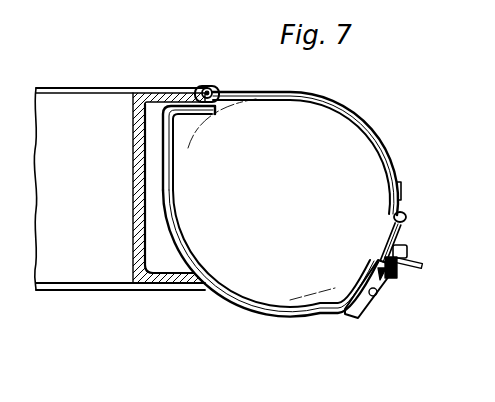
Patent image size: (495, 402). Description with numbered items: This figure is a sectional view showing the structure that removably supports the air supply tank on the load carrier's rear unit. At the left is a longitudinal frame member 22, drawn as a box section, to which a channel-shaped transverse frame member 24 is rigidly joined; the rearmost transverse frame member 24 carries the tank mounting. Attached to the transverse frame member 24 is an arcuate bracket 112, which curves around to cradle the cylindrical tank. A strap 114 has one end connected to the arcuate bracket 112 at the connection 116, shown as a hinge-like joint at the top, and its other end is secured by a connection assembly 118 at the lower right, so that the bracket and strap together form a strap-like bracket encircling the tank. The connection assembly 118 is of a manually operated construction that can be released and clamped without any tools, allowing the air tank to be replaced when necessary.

The longitudinal frame member 22 is at (85, 97).
The transverse frame member 24 is at (133, 140).
The arcuate bracket 112 is at (178, 242).
The strap 114 is at (352, 112).
The connection 116 is at (209, 88).
The connection assembly 118 is at (416, 247).